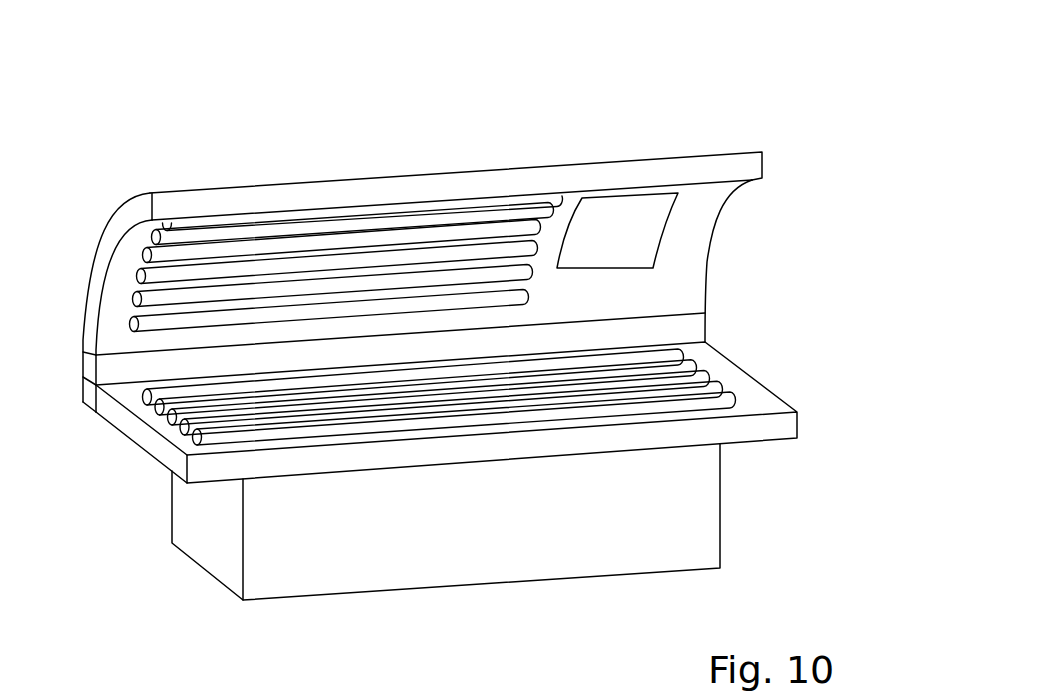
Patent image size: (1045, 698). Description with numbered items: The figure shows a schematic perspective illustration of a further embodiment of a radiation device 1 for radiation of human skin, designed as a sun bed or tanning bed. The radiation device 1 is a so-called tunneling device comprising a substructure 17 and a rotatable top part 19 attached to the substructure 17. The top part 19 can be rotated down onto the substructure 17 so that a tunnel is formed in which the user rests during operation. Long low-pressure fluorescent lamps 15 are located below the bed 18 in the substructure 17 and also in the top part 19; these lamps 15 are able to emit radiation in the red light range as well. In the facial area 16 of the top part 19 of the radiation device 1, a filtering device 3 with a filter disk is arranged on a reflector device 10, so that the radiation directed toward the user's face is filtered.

The radiation device 1 is at (801, 78).
The filtering device 3 is at (589, 174).
The reflector device 10 is at (658, 190).
The low-pressure fluorescent lamps 15 is at (315, 263).
The facial area 16 is at (768, 297).
The substructure 17 is at (703, 512).
The bed 18 is at (727, 372).
The top part 19 is at (698, 235).